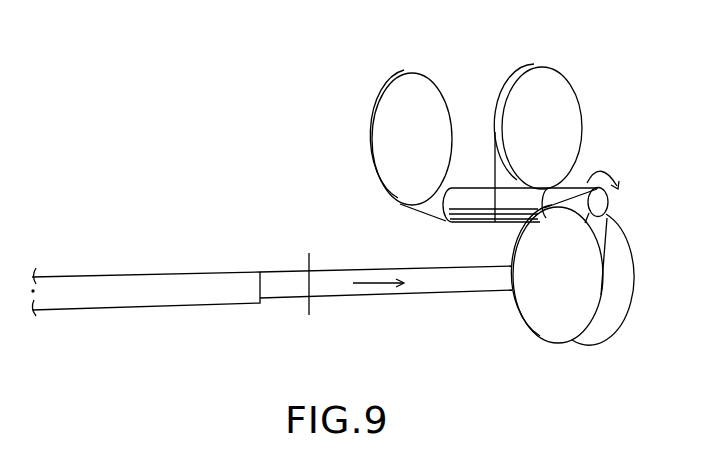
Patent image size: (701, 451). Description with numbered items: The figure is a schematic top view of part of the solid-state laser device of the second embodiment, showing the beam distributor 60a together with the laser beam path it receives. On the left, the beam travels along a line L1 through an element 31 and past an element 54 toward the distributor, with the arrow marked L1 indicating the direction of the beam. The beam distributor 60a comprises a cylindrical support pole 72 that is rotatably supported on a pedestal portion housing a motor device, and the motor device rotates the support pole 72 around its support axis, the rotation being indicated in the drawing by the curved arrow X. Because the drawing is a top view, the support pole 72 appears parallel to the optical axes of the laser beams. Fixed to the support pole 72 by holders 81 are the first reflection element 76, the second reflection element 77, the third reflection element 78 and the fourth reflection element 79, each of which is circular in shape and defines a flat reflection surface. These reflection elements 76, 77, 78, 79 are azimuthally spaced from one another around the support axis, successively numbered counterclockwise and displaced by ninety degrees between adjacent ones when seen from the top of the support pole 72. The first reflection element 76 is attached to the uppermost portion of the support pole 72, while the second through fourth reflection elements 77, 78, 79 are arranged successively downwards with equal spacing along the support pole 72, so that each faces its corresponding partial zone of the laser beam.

The beam distributor 60a is at (526, 36).
The fourth reflection element 79 is at (410, 80).
The third reflection element 78 is at (562, 102).
The holders 81 is at (505, 176).
The support pole 72 is at (597, 202).
The rotation direction X is at (610, 170).
The second reflection element 77 is at (610, 313).
The first reflection element 76 is at (555, 323).
The shaft 31 is at (150, 295).
The tube 54 is at (309, 315).
The direction of movement L1 is at (373, 281).